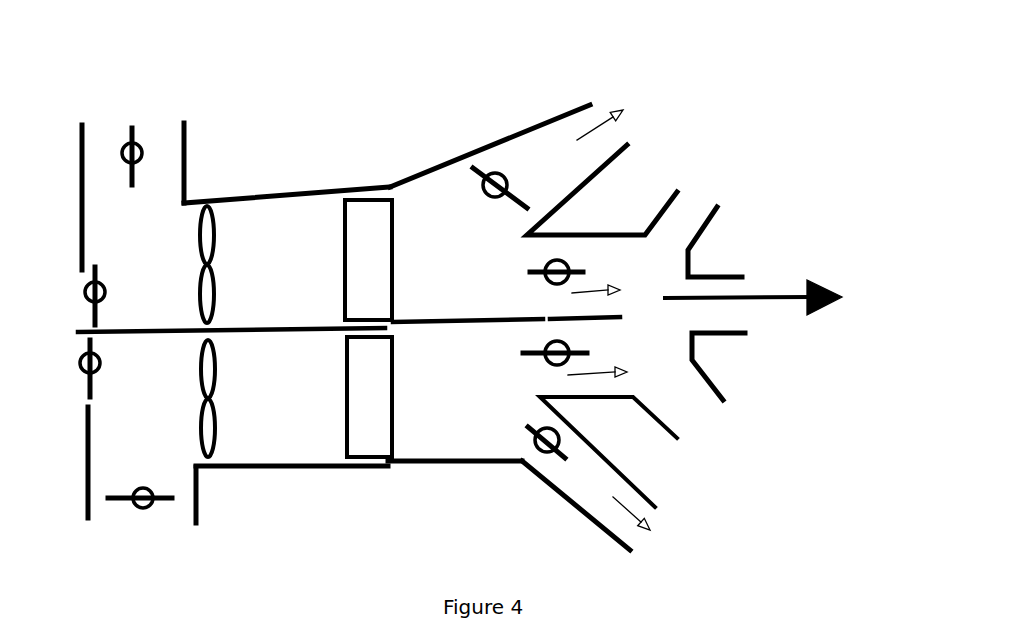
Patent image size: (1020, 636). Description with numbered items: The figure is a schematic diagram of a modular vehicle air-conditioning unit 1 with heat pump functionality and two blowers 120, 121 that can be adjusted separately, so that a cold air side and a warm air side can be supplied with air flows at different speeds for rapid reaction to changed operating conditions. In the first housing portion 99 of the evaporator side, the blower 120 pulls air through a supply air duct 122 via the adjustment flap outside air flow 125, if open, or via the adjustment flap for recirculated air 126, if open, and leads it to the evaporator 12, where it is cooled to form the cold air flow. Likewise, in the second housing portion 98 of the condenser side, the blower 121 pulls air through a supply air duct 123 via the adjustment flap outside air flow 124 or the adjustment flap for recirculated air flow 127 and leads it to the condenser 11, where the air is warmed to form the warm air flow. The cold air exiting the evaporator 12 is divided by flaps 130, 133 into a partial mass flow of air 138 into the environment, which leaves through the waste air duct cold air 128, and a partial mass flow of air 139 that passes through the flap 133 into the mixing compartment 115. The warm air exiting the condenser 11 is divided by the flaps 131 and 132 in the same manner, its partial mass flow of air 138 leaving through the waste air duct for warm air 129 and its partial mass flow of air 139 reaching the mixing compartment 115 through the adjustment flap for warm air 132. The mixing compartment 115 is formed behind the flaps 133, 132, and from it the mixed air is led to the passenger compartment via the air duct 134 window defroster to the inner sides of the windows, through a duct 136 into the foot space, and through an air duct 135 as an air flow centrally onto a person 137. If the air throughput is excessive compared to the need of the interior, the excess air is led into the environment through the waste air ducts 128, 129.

The modular vehicle air-conditioning unit 1 is at (785, 80).
The condenser 11 is at (395, 400).
The evaporator 12 is at (395, 253).
The second housing portion 98 is at (433, 470).
The first housing portion 99 is at (368, 178).
The mixing compartment 115 is at (377, 322).
The blower 120 is at (215, 232).
The blower 121 is at (216, 417).
The supply air duct 122 is at (187, 160).
The supply air duct 123 is at (200, 493).
The adjustment flap outside air flow 124 is at (145, 487).
The adjustment flap outside air flow 125 is at (133, 133).
The adjustment flap for recirculated air 126 is at (84, 292).
The adjustment flap for recirculated air flow 127 is at (79, 362).
The waste air duct cold air 128 is at (485, 143).
The waste air duct for warm air 129 is at (555, 497).
The flap 130 is at (484, 167).
The flap 131 is at (528, 430).
The adjustment flap for warm air 132 is at (540, 346).
The flap 133 is at (545, 263).
The air duct window defroster 134 is at (668, 193).
The air duct 135 is at (718, 268).
The duct 136 is at (713, 380).
The person 137 is at (823, 285).
The partial mass flow of air 138 is at (636, 321).
The partial mass flow of air 139 is at (604, 322).